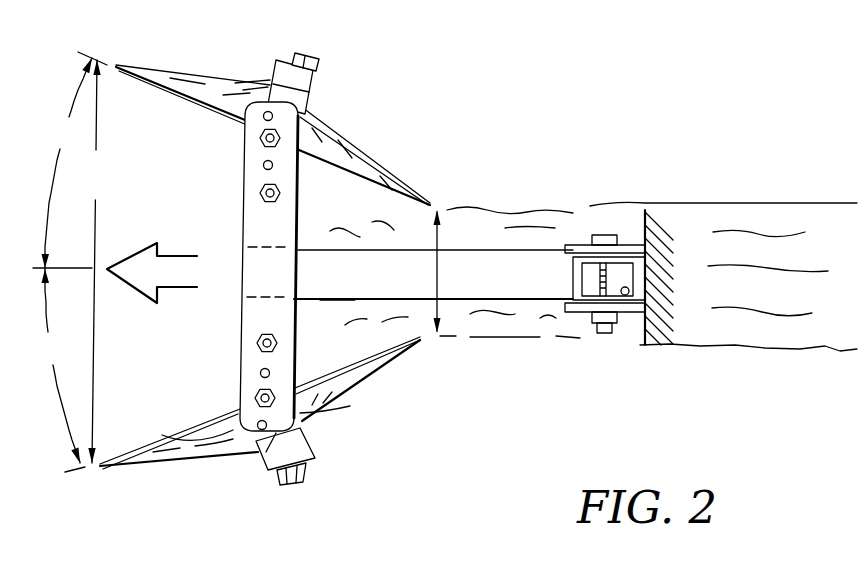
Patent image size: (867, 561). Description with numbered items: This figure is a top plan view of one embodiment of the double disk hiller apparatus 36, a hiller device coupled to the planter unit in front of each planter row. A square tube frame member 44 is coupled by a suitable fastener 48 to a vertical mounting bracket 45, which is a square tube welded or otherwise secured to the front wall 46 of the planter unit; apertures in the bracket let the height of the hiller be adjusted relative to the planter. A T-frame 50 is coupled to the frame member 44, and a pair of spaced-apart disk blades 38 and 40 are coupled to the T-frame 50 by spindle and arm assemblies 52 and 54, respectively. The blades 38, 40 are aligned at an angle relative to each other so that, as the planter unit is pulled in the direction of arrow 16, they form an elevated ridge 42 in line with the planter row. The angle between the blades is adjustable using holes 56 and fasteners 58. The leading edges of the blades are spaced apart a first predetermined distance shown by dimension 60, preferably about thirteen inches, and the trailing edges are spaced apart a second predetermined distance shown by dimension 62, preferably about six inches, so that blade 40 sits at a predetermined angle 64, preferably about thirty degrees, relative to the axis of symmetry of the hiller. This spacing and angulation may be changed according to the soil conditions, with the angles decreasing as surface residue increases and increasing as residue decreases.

The arrow 16 is at (186, 267).
The double disk hiller apparatus 36 is at (184, 52).
The disk blade 38 is at (193, 450).
The disk blade 40 is at (390, 170).
The elevated ridge 42 is at (528, 211).
The square tube frame member 44 is at (500, 302).
The vertical mounting bracket 45 is at (626, 300).
The front wall 46 is at (647, 235).
The fastener 48 is at (592, 318).
The T-frame 50 is at (242, 313).
The spindle and arm assembly 52 is at (277, 446).
The spindle and arm assembly 54 is at (292, 99).
The holes 56 is at (263, 120).
The fasteners 58 is at (262, 193).
The dimension 60 is at (88, 262).
The dimension 62 is at (439, 244).
The angle 64 is at (62, 260).